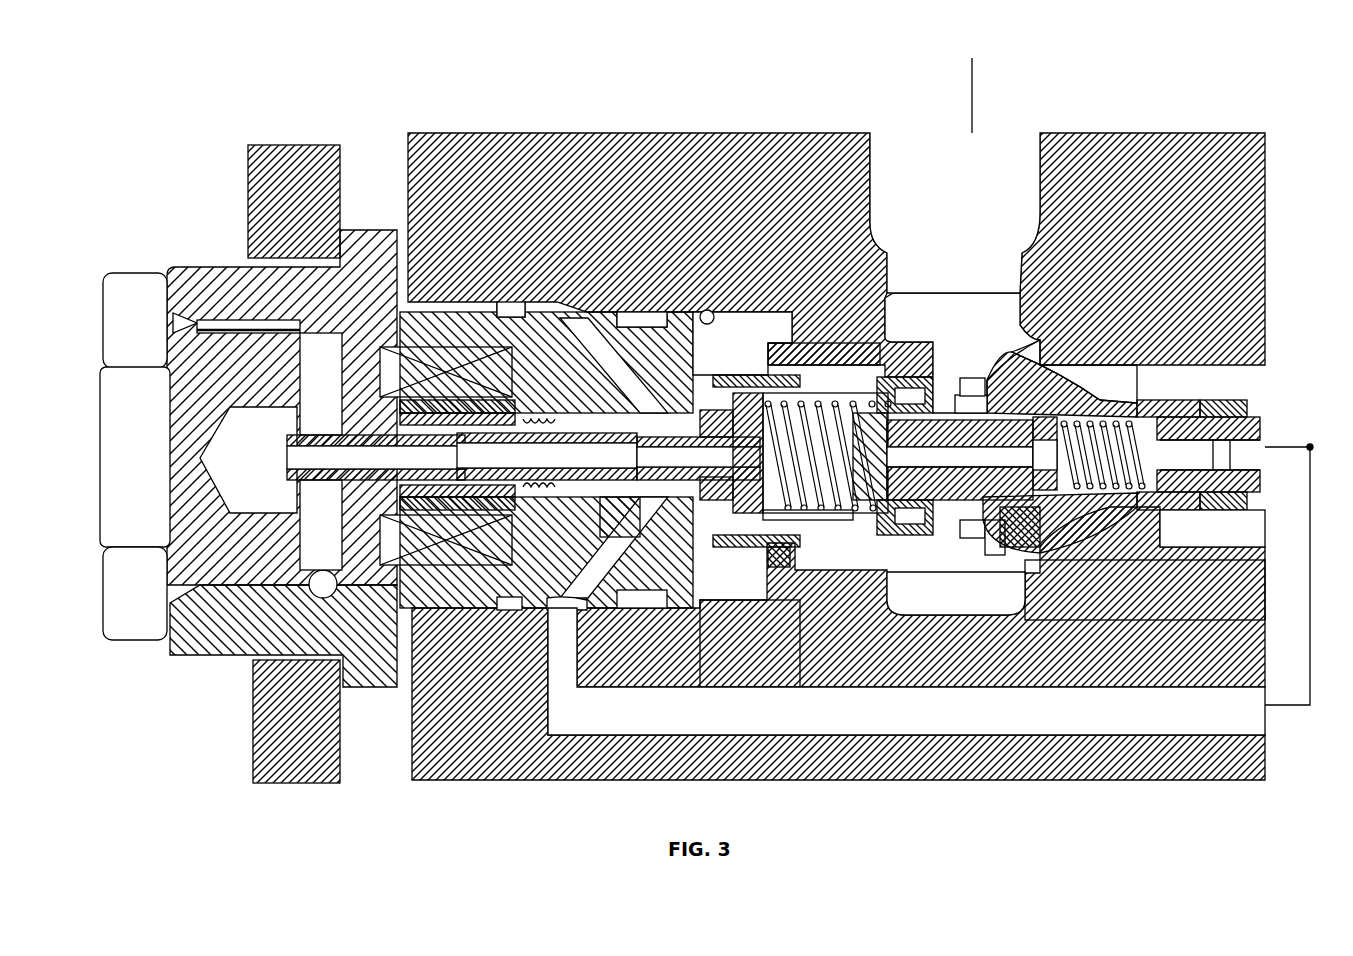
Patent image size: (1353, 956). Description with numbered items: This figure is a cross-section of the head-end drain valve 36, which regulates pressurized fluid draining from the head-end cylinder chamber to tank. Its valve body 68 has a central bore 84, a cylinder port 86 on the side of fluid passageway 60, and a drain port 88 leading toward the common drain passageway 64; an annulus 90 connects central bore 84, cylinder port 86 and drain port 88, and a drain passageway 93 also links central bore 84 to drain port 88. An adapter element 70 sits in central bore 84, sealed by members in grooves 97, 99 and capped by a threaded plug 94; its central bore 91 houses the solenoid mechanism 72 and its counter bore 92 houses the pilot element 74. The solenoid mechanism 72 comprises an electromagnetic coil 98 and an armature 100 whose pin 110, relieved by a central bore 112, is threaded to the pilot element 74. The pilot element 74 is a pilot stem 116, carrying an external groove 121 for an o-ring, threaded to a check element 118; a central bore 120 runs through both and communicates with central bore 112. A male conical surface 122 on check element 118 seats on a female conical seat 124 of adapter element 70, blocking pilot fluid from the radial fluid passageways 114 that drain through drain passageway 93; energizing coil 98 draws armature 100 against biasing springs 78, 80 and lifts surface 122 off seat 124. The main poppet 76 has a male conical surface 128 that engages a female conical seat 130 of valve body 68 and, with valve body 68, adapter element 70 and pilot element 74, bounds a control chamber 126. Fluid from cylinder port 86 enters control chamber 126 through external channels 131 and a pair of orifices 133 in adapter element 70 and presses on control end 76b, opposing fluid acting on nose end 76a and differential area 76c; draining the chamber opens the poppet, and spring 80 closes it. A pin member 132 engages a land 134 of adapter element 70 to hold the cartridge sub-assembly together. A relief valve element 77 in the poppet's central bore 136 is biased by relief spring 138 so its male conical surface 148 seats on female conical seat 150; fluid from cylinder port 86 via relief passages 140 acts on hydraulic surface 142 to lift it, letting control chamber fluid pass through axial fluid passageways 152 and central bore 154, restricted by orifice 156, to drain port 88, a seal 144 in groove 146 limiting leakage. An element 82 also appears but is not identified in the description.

The head-end drain valve 36 is at (200, 97).
The fluid passageway 60 is at (972, 96).
The common drain passageway 64 is at (1310, 440).
The valve body 68 is at (836, 456).
The adapter element 70 is at (283, 636).
The solenoid mechanism 72 is at (252, 285).
The pilot element 74 is at (578, 524).
The main poppet 76 is at (1020, 527).
The nose end 76a is at (1145, 590).
The control end 76b is at (795, 602).
The differential area 76c is at (962, 353).
The relief valve element 77 is at (1062, 384).
The biasing spring 78 is at (522, 398).
The biasing spring 80 is at (812, 402).
The spring 82 is at (1105, 508).
The central bore 84 is at (710, 310).
The cylinder port 86 is at (955, 213).
The drain port 88 is at (1212, 528).
The annulus 90 is at (956, 593).
The central bore 91 is at (340, 597).
The counter bore 92 is at (352, 515).
The drain passageway 93 is at (906, 671).
The plug 94 is at (135, 456).
The groove 97 is at (508, 612).
The electromagnetic coil 98 is at (446, 456).
The groove 99 is at (652, 608).
The armature 100 is at (344, 390).
The pin 110 is at (292, 438).
The central bore 112 is at (376, 457).
The fluid passageways 114 is at (636, 372).
The pilot stem 116 is at (522, 322).
The check element 118 is at (655, 517).
The central bore 120 is at (608, 453).
The external groove 121 is at (608, 497).
The male conical surface 122 is at (705, 412).
The female conical seat 124 is at (742, 343).
The control chamber 126 is at (825, 464).
The male conical surface 128 is at (1062, 385).
The female conical seat 130 is at (1044, 320).
The channels 131 is at (800, 348).
The pin member 132 is at (770, 558).
The orifices 133 is at (748, 371).
The land 134 is at (808, 523).
The central bore 136 is at (1195, 400).
The relief spring 138 is at (1142, 400).
The relief passages 140 is at (962, 380).
The hydraulic surface 142 is at (982, 395).
The seal 144 is at (1060, 534).
The groove 146 is at (992, 530).
The male conical surface 148 is at (960, 433).
The female conical seat 150 is at (877, 454).
The fluid passageways 152 is at (905, 456).
The central bore 154 is at (1150, 608).
The restrictive orifice 156 is at (960, 483).